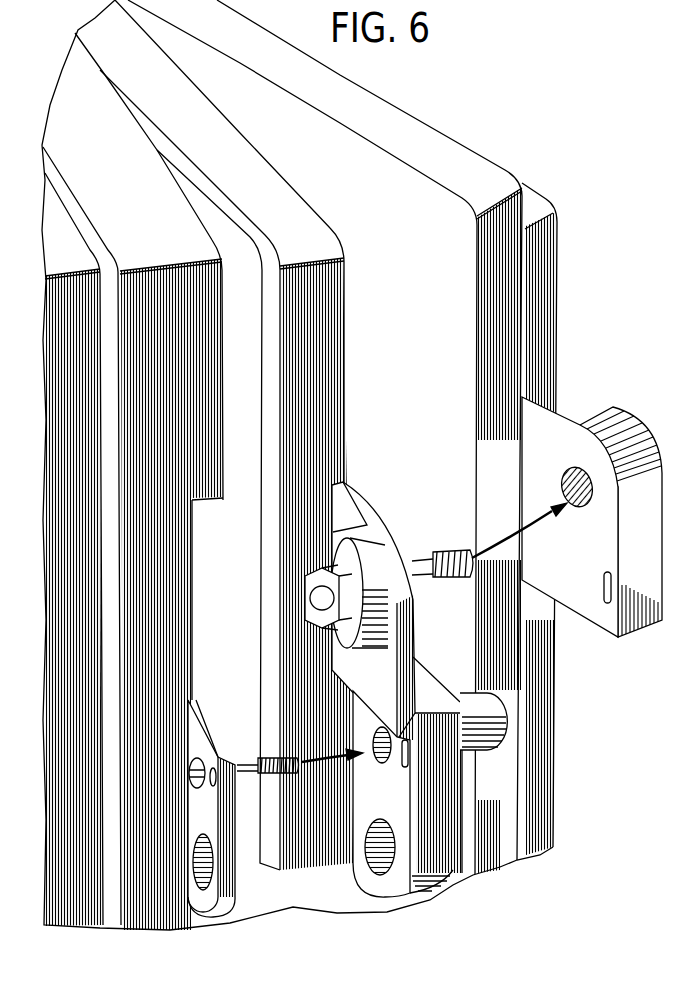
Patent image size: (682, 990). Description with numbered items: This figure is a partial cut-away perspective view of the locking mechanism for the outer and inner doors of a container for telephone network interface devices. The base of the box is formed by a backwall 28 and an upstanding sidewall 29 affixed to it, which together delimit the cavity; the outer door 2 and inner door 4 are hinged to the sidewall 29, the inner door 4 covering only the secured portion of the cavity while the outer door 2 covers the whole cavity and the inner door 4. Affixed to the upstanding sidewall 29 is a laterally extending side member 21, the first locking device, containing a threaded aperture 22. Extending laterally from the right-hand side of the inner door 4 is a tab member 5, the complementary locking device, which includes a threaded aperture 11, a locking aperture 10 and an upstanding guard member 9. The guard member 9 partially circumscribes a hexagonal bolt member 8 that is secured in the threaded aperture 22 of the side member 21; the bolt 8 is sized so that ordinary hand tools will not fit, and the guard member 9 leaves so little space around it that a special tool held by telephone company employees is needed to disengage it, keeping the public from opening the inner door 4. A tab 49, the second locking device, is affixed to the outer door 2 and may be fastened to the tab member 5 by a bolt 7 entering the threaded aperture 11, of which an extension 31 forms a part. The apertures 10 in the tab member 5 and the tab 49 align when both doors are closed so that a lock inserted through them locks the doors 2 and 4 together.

The outer door 2 is at (67, 252).
The inner door 4 is at (220, 162).
The backwall 28 is at (425, 342).
The upstanding sidewall 29 is at (333, 97).
The upstanding guard member 9 is at (379, 567).
The hexagonal bolt member 8 is at (315, 600).
The tab member 5 is at (379, 684).
The threaded aperture 11 is at (374, 737).
The extension 31 is at (472, 700).
The tab 49 is at (226, 912).
The locking aperture 10 is at (189, 898).
The bolt 7 is at (201, 762).
The side member 21 is at (583, 564).
The threaded aperture 22 is at (590, 500).